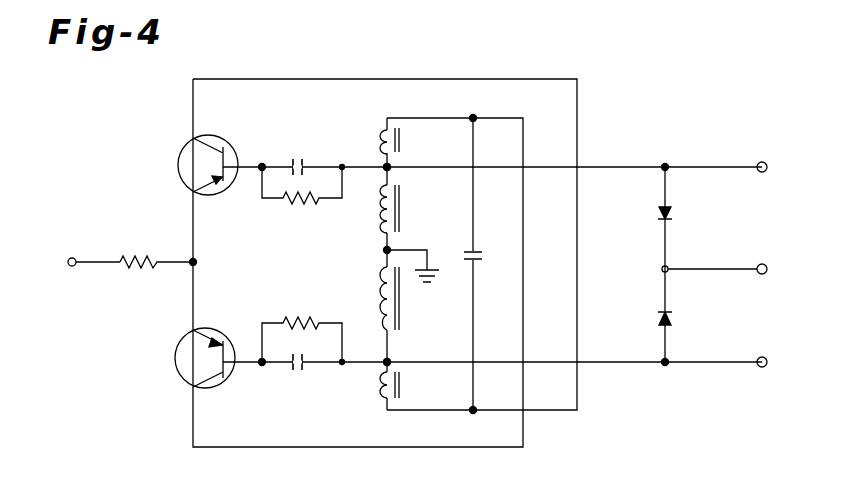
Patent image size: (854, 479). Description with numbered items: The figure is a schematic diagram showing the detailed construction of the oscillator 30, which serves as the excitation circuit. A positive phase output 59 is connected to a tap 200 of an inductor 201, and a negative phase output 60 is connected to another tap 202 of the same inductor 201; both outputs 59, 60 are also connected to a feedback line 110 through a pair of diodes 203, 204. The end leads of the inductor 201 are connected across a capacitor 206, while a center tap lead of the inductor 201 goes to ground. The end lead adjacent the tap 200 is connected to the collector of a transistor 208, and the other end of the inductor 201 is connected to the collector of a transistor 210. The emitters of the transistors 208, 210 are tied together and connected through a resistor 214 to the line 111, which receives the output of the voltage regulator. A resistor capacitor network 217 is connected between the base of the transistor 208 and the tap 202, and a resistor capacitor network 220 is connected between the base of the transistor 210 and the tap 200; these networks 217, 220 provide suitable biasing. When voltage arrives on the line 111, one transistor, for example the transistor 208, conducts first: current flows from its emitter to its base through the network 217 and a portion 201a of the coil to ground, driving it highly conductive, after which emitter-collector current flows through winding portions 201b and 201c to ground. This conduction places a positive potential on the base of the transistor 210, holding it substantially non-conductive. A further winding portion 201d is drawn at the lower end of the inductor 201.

The oscillator 30 is at (410, 62).
The positive phase output 59 is at (703, 167).
The negative phase output 60 is at (703, 362).
The feedback line 110 is at (712, 269).
The line 111 is at (93, 260).
The tap 200 is at (390, 166).
The inductor 201 is at (384, 248).
The coil portion 201a is at (393, 302).
The winding portion 201b is at (376, 141).
The winding portion 201c is at (400, 208).
The transformer winding 201d is at (378, 388).
The tap 202 is at (393, 366).
The diode 203 is at (658, 213).
The diode 204 is at (658, 320).
The capacitor 206 is at (477, 255).
The transistor 208 is at (207, 328).
The transistor 210 is at (227, 144).
The resistor 214 is at (141, 272).
The resistor capacitor network 217 is at (316, 321).
The resistor capacitor network 220 is at (312, 206).